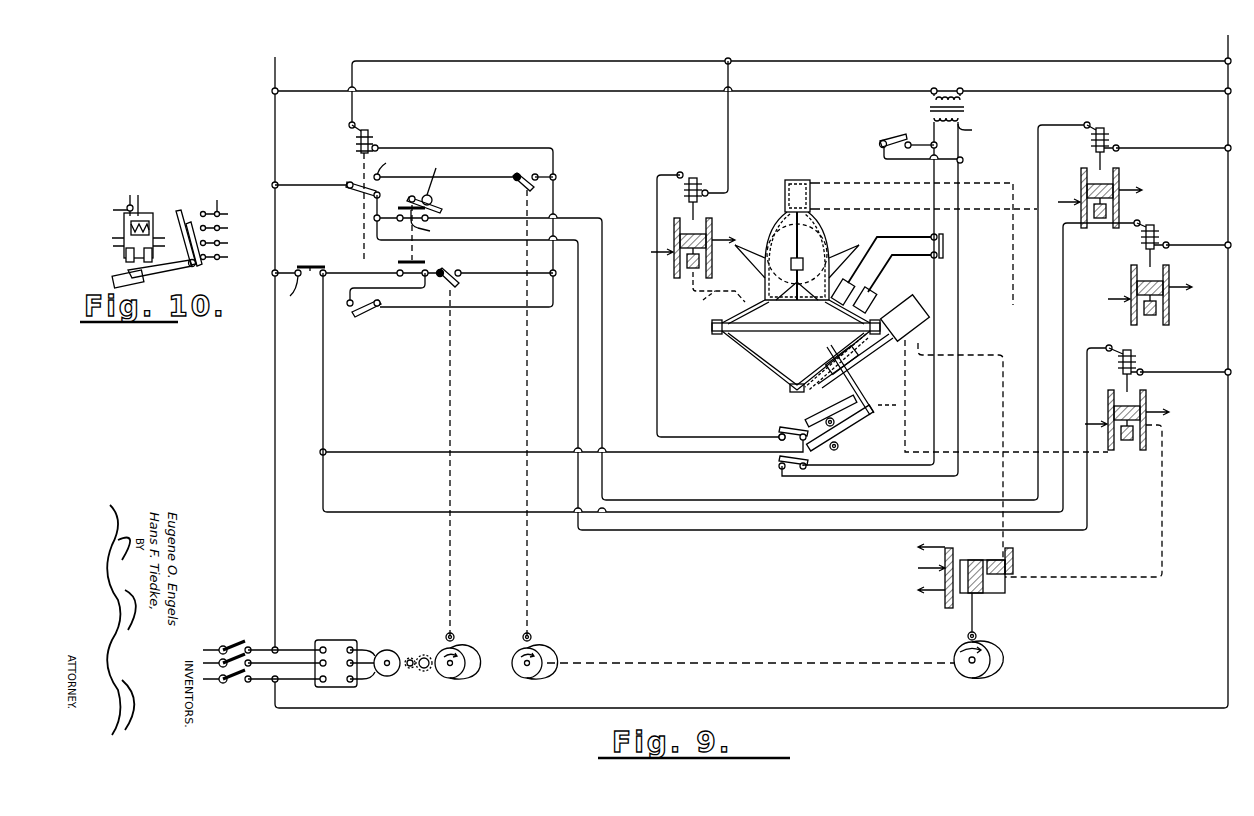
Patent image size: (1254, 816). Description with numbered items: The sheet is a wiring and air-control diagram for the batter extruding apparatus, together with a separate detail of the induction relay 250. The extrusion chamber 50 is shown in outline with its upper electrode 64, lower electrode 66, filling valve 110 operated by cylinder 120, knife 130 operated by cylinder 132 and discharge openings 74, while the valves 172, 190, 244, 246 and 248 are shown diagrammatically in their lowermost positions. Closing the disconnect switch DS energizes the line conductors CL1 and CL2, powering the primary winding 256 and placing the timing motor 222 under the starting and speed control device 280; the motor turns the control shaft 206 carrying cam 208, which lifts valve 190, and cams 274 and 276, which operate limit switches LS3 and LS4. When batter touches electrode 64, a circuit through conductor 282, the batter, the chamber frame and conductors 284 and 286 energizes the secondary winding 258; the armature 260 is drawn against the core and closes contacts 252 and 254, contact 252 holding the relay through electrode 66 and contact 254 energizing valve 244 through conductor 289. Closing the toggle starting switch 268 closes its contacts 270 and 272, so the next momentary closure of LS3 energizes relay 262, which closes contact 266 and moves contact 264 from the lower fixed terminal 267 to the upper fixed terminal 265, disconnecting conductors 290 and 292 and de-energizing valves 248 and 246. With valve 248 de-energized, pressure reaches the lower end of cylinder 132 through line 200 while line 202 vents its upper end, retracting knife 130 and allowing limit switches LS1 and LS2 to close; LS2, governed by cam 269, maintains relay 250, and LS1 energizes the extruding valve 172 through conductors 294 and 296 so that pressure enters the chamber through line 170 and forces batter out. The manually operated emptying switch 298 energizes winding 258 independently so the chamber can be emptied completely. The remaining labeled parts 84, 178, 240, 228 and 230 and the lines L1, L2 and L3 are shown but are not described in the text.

In FIG. 9, the line conductor CL1 is at (276, 72).
In FIG. 9, the line conductor CL2 is at (1228, 42).
In FIG. 9, the electromagnetic relay 262 is at (379, 142).
In FIG. 9, the contact 264 is at (370, 175).
In FIG. 9, the upper fixed terminal 265 is at (391, 189).
In FIG. 9, the lower fixed terminal 267 is at (365, 192).
In FIG. 9, the starting and stopping switch 268 is at (462, 183).
In FIG. 9, the contact 270 is at (430, 232).
In FIG. 9, the contact 272 is at (399, 262).
In FIG. 9, the induction relay 250 is at (325, 264).
In FIG. 10, the induction relay 250 is at (158, 193).
In FIG. 9, the contact 254 is at (294, 293).
In FIG. 10, the contact 254 is at (228, 250).
In FIG. 9, the movable contact 266 is at (355, 318).
In FIG. 9, the limit switch LS1 is at (778, 430).
In FIG. 9, the limit switch LS2 is at (778, 460).
In FIG. 9, the limit switch LS3 is at (446, 272).
In FIG. 9, the limit switch LS4 is at (512, 178).
In FIG. 9, the conductor 289 is at (548, 513).
In FIG. 9, the conductor 290 is at (578, 378).
In FIG. 9, the conductor 292 is at (602, 355).
In FIG. 9, the conductor 294 is at (372, 448).
In FIG. 9, the conductor 296 is at (657, 390).
In FIG. 9, the line 170 is at (710, 290).
In FIG. 9, the extruding valve 172 is at (712, 216).
In FIG. 9, the cylinder 120 is at (800, 178).
In FIG. 9, the distributor head 84 is at (785, 285).
In FIG. 9, the filling valve 110 is at (771, 318).
In FIG. 9, the upper electrode 64 is at (835, 324).
In FIG. 9, the extrusion chamber 50 is at (742, 352).
In FIG. 9, the lower electrode 66 is at (830, 336).
In FIG. 9, the discharge openings 74 is at (806, 378).
In FIG. 9, the knife 130 is at (792, 390).
In FIG. 9, the cylinder 132 is at (905, 302).
In FIG. 9, the conductor 284 is at (880, 375).
In FIG. 9, the lever 178 is at (828, 403).
In FIG. 9, the cam 269 is at (845, 445).
In FIG. 9, the line 200 is at (1163, 520).
In FIG. 9, the line 202 is at (994, 336).
In FIG. 9, the emptying switch 298 is at (888, 138).
In FIG. 9, the primary winding 256 is at (960, 91).
In FIG. 10, the primary winding 256 is at (136, 205).
In FIG. 9, the secondary winding 258 is at (978, 131).
In FIG. 10, the secondary winding 258 is at (186, 210).
In FIG. 9, the air line 240 is at (993, 182).
In FIG. 9, the conductor 282 is at (925, 193).
In FIG. 9, the contact 252 is at (943, 252).
In FIG. 10, the contact 252 is at (212, 205).
In FIG. 9, the conductor 286 is at (1010, 300).
In FIG. 9, the valve 246 is at (1119, 143).
In FIG. 9, the valve 244 is at (1166, 238).
In FIG. 9, the valve 248 is at (1153, 396).
In FIG. 9, the valve 190 is at (1013, 564).
In FIG. 9, the control shaft 206 is at (955, 652).
In FIG. 9, the cam 208 is at (990, 672).
In FIG. 9, the disconnect switch DS is at (236, 648).
In FIG. 9, the power line 1 L1 is at (265, 648).
In FIG. 9, the power line 2 L2 is at (258, 676).
In FIG. 9, the power line 3 L3 is at (287, 680).
In FIG. 9, the starting and speed control device 280 is at (338, 688).
In FIG. 9, the timing motor 222 is at (396, 652).
In FIG. 9, the gear 228 is at (408, 670).
In FIG. 9, the gear 230 is at (427, 672).
In FIG. 9, the cam 274 is at (470, 648).
In FIG. 9, the cam 276 is at (547, 648).
In FIG. 10, the armature 260 is at (178, 272).